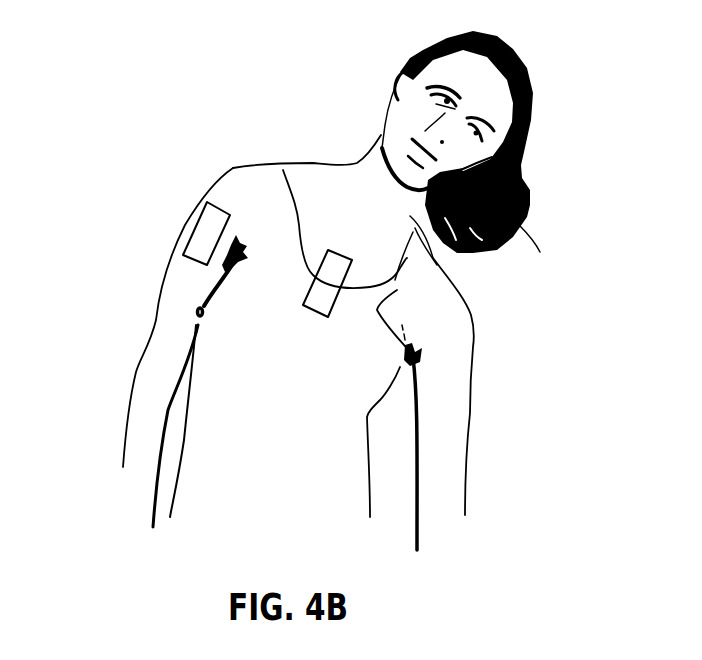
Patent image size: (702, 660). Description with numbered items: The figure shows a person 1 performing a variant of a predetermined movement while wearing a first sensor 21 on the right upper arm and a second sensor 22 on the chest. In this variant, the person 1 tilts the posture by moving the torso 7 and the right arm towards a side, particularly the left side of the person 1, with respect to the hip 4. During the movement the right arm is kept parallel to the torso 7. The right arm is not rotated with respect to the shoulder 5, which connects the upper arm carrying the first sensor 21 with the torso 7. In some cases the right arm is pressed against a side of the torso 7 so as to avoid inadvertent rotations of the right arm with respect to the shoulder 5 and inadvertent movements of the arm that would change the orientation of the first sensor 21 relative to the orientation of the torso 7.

The person 1 is at (322, 290).
The hip 4 is at (187, 503).
The shoulder 5 is at (238, 178).
The torso 7 is at (382, 418).
The first sensor 21 is at (209, 234).
The second sensor 22 is at (323, 289).